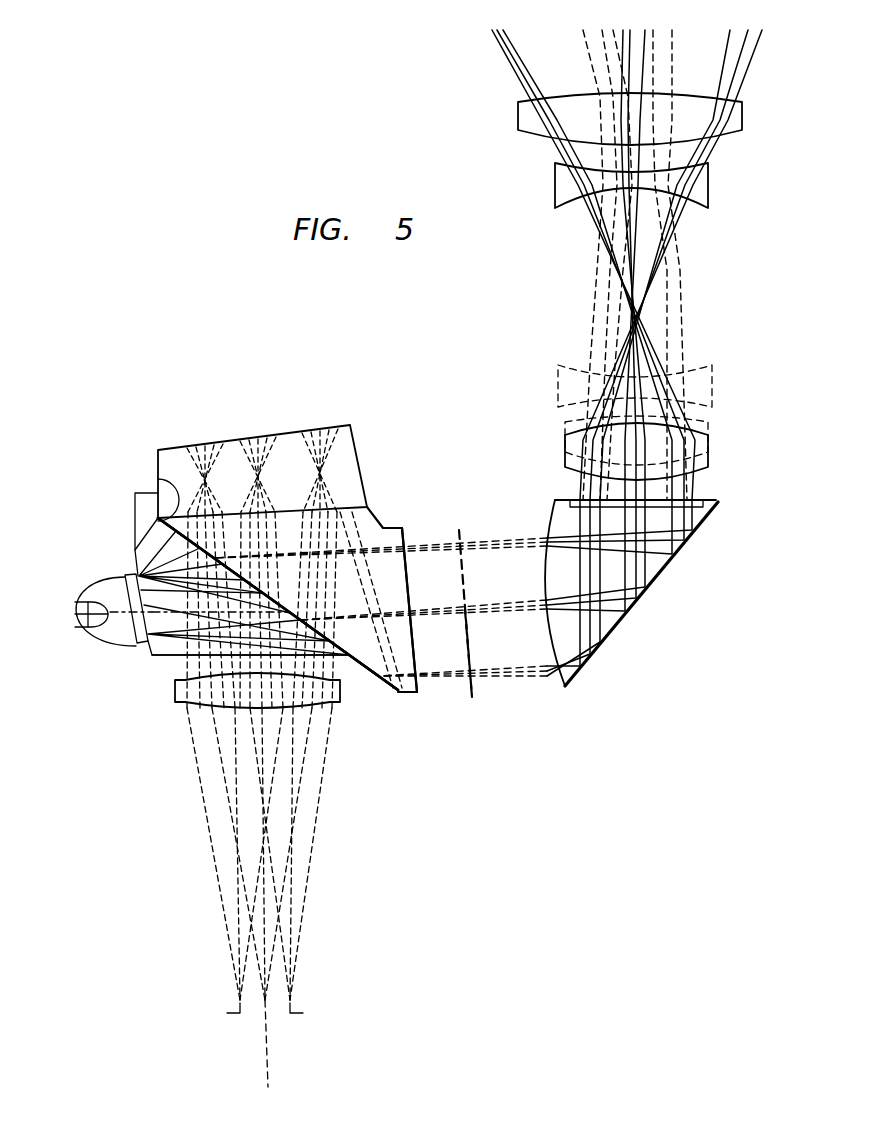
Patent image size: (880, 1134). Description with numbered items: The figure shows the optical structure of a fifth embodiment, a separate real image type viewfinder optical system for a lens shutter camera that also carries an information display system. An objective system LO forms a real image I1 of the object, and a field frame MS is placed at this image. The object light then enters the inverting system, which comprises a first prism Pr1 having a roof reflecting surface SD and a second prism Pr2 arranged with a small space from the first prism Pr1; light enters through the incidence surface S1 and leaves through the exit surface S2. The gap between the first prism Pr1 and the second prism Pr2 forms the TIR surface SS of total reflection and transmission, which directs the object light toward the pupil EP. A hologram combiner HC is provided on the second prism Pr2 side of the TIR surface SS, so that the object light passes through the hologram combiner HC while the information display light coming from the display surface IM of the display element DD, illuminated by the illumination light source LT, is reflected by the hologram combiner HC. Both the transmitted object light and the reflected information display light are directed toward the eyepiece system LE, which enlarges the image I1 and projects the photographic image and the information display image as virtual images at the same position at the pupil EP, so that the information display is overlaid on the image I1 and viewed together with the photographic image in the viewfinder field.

The objective system LO is at (777, 25).
The roof reflecting surface SD is at (343, 425).
The hologram combiner HC is at (158, 482).
The display surface IM is at (135, 549).
The display element DD is at (127, 572).
The illumination light source LT is at (80, 603).
The second prism Pr2 is at (131, 649).
The exit surface S2 is at (168, 658).
The TIR surface SS is at (346, 663).
The eyepiece system LE is at (344, 702).
The first prism Pr1 is at (378, 518).
The incidence surface S1 is at (406, 541).
The field frame MS is at (462, 546).
The image I1 is at (465, 688).
The pupil EP is at (296, 1009).